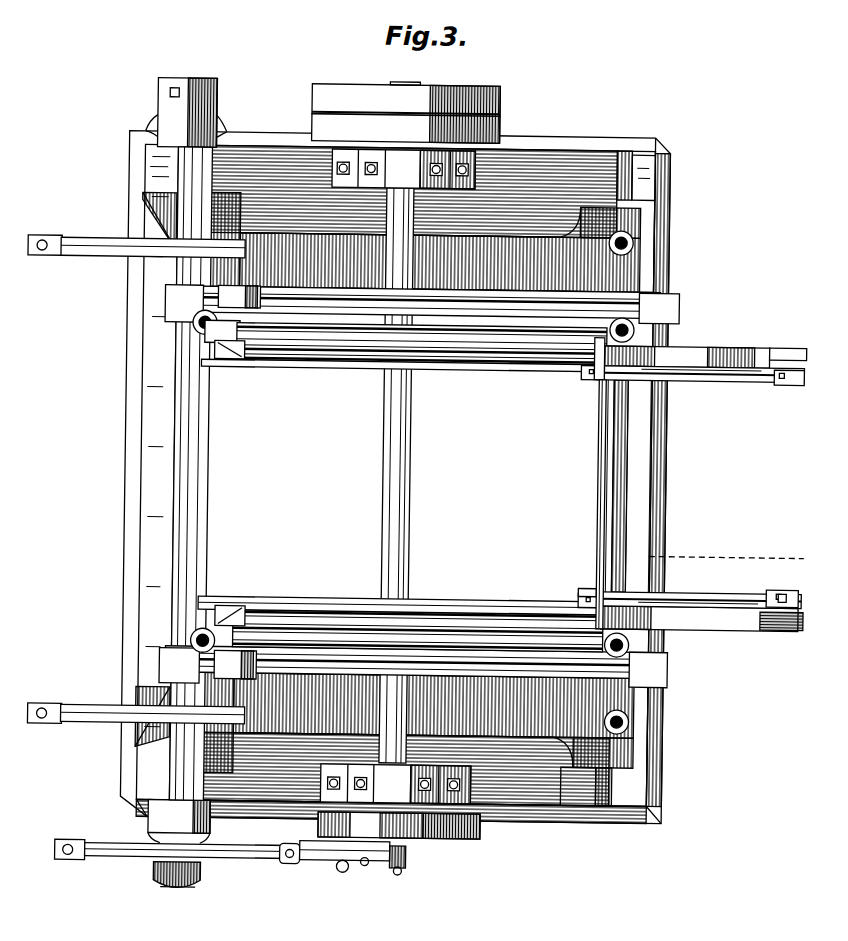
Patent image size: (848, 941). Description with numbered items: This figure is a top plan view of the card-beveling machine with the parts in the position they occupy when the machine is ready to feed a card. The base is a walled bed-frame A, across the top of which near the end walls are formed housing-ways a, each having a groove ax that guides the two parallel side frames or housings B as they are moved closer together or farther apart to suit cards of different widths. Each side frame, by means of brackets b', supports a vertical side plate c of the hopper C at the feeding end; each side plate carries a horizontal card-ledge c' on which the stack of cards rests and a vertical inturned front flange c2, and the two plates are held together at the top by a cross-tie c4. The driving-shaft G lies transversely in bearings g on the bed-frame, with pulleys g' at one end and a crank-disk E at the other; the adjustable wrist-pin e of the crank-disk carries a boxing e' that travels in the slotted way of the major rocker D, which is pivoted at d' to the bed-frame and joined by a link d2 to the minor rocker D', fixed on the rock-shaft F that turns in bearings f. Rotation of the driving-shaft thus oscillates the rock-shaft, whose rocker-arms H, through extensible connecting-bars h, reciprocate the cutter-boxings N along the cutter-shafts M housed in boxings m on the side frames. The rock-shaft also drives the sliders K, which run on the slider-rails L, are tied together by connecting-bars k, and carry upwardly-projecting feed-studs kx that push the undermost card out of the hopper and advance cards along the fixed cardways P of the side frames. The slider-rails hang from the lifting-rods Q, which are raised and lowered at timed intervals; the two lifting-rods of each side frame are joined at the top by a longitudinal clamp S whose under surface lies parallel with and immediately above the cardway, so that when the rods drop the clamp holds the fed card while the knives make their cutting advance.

The bed-frame A is at (580, 145).
The housing-ways a is at (585, 540).
The groove ax is at (621, 152).
The side frames or housings B is at (428, 475).
The hopper C is at (705, 487).
The side plates c is at (701, 488).
The card-ledge c' is at (702, 487).
The front flange c2 is at (578, 370).
The cross-tie c4 is at (600, 493).
The brackets b' is at (783, 486).
The major rocker D is at (334, 868).
The minor rocker D' is at (55, 851).
The pivot d' is at (399, 871).
The link d2 is at (253, 861).
The crank-disk E is at (399, 825).
The wrist-pin e is at (341, 876).
The boxing e' is at (366, 869).
The rock-shaft F is at (185, 500).
The bearings f is at (182, 460).
The driving-shaft G is at (396, 475).
The bearings g is at (399, 476).
The pulleys g' is at (406, 112).
The rocker-arms H is at (43, 246).
The extensible connecting-bar h is at (148, 254).
The sliders K is at (565, 396).
The connecting-bars k is at (742, 379).
The feed-studs kx is at (578, 591).
The slider-rails L is at (365, 369).
The cutter-shafts M is at (412, 480).
The boxings m is at (419, 487).
The cutter-boxing N is at (237, 482).
The wedge o is at (238, 361).
The cardway P is at (525, 370).
The lifting-rods Q is at (190, 328).
The clamp S is at (420, 487).